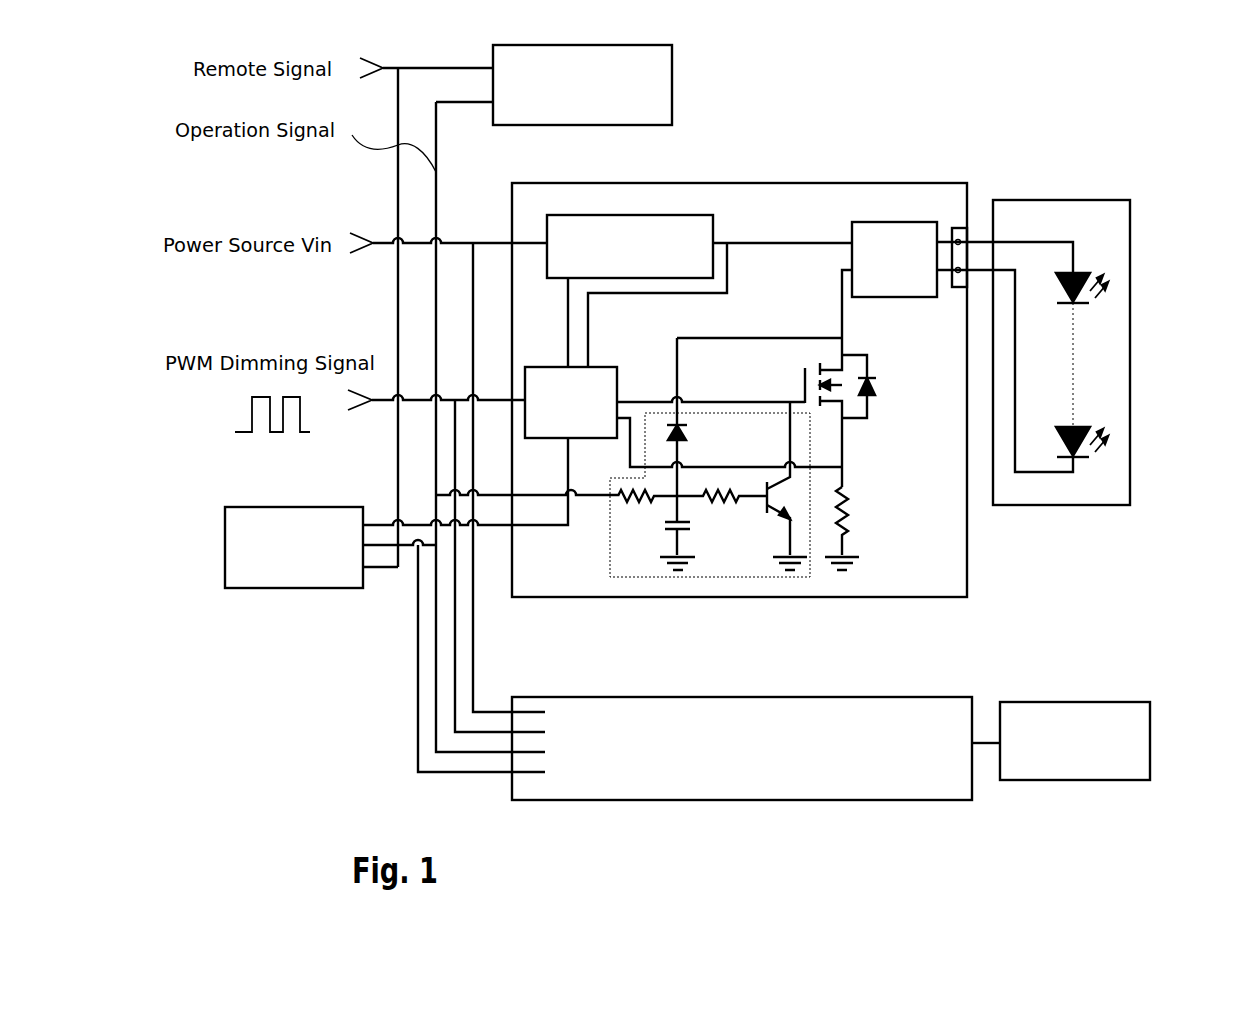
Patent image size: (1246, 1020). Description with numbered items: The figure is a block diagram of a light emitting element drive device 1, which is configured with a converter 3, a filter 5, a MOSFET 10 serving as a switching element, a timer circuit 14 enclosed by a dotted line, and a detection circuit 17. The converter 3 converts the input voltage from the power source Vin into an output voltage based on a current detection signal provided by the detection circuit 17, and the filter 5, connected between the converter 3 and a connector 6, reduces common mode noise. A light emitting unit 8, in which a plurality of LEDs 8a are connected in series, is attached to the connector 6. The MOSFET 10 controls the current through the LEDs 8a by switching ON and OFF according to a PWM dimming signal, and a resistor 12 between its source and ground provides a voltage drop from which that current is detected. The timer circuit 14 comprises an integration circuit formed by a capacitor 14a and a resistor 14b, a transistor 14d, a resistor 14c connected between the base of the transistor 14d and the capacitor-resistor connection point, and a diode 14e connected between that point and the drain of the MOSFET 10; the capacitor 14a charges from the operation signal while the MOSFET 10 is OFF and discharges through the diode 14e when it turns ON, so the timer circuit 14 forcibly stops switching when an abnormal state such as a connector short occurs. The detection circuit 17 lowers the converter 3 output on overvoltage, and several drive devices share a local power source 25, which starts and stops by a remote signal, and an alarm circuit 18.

The light emitting element drive device 1 is at (737, 183).
The converter 3 is at (622, 215).
The filter 5 is at (877, 222).
The connector 6 is at (952, 236).
The light emitting unit 8 is at (1040, 200).
The LEDs 8a is at (1082, 273).
The MOSFET 10 is at (840, 388).
The resistor 12 is at (847, 498).
The timer circuit 14 is at (745, 577).
The capacitor 14a is at (668, 527).
The resistor 14b is at (625, 503).
The resistor 14c is at (727, 503).
The transistor 14d is at (777, 512).
The diode 14e is at (682, 437).
The detection circuit 17 is at (525, 378).
The alarm circuit 18 is at (278, 590).
The local power source 25 is at (672, 78).